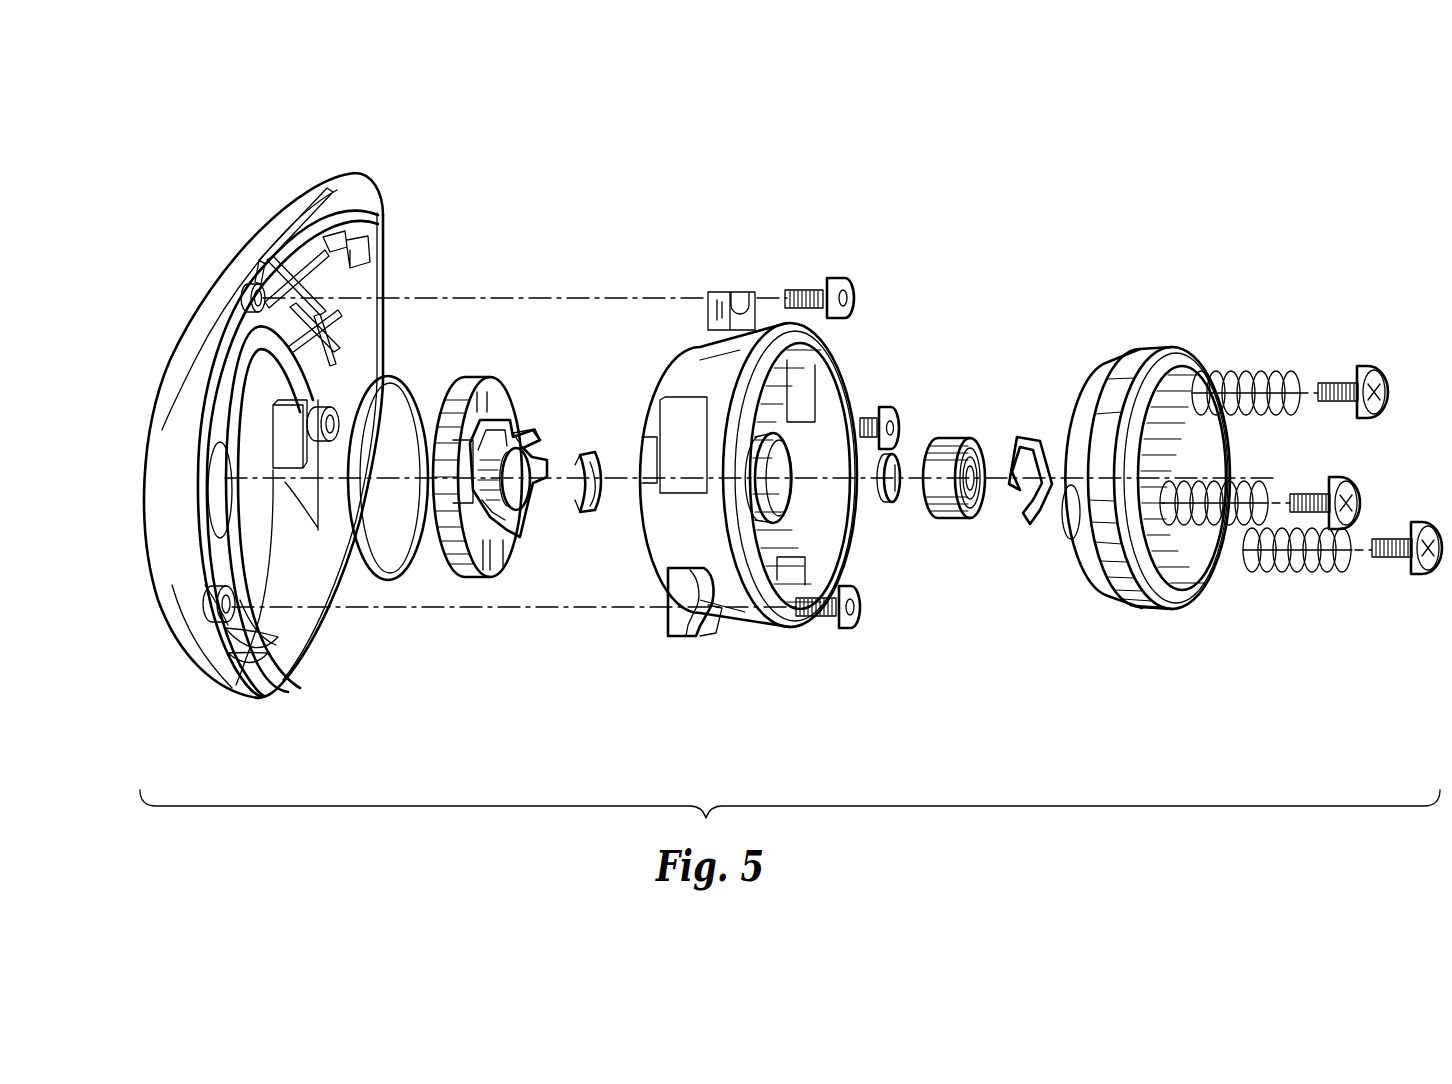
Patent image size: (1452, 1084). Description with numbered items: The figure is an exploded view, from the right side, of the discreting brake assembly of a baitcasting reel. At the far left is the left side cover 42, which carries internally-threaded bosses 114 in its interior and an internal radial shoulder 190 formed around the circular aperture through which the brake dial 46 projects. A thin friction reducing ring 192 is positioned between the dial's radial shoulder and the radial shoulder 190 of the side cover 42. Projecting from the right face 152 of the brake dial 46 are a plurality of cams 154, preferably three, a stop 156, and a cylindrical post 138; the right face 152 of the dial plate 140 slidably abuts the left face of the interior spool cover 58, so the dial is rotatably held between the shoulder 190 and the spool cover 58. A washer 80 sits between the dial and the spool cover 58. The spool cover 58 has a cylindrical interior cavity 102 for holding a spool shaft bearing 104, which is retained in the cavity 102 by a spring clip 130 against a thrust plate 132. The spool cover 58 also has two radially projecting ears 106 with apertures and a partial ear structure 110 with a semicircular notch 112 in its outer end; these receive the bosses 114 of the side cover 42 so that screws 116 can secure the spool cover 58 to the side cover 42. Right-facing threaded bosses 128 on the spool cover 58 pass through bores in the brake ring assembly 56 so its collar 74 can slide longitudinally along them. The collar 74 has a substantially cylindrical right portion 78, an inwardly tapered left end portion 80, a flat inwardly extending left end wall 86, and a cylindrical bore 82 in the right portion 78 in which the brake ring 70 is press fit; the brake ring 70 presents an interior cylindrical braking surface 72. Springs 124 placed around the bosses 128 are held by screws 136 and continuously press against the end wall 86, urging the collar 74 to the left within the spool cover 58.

The left side cover 42 is at (383, 233).
The internally-threaded bosses 114 is at (242, 617).
The internally threaded bosses 128 is at (232, 598).
The internal radial shoulder 190 is at (213, 590).
The friction reducing ring 192 is at (393, 580).
The brake dial 46 is at (490, 380).
The right face 152 is at (497, 397).
The cams 154 is at (493, 533).
The stop 156 is at (533, 440).
The cylindrical post 138 is at (530, 500).
The dial plate 140 is at (536, 493).
The inwardly tapered left longitudinal end portion 80 is at (1083, 400).
The interior spool cover 58 is at (775, 470).
The partial ear structure 110 is at (717, 297).
The semicircular notch 112 is at (743, 300).
The cylindrical interior cavity 102 is at (778, 498).
The radially projecting ears 106 is at (687, 637).
The screws 116 is at (857, 615).
The thrust plate 132 is at (885, 497).
The spool shaft bearing 104 is at (952, 440).
The spring clip 130 is at (1033, 440).
The brake ring assembly 56 is at (1152, 465).
The collar 74 is at (1093, 570).
The left end wall 86 is at (1073, 550).
The brake ring 70 is at (1195, 441).
The cylindrical bore 82 is at (1170, 350).
The interior cylindrical braking surface 72 is at (1183, 577).
The cylindrical right portion 78 is at (1143, 610).
The springs 124 is at (1313, 573).
The screws 136 is at (1423, 573).